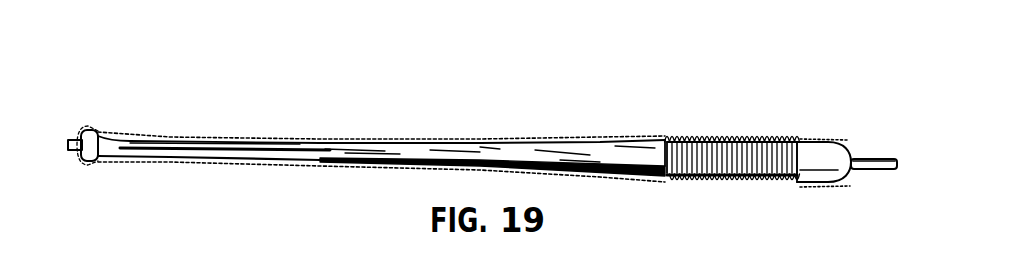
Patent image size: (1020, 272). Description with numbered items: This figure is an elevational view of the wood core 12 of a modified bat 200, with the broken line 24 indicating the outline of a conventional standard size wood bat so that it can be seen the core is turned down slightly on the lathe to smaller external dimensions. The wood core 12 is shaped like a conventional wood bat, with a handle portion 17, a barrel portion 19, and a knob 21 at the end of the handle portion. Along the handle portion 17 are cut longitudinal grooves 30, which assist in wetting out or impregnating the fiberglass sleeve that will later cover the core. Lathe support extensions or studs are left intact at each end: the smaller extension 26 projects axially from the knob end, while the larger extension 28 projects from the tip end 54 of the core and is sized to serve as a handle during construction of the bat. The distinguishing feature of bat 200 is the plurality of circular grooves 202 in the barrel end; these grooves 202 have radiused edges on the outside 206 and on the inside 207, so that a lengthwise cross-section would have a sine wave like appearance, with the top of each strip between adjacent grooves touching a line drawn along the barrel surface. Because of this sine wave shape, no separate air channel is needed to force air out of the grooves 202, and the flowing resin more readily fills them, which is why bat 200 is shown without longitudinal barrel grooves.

The wood core 12 is at (595, 152).
The handle portion 17 is at (262, 152).
The barrel portion 19 is at (643, 150).
The knob 21 is at (90, 132).
The broken line 24 is at (442, 145).
The lathe support extension 26 is at (77, 137).
The lathe support extension 28 is at (873, 157).
The longitudinal grooves 30 is at (187, 150).
The tip end 54 is at (848, 183).
The bat 200 is at (750, 108).
The grooves 202 is at (757, 193).
The outside radiused edges 206 is at (667, 136).
The inside radiused edges 207 is at (685, 137).